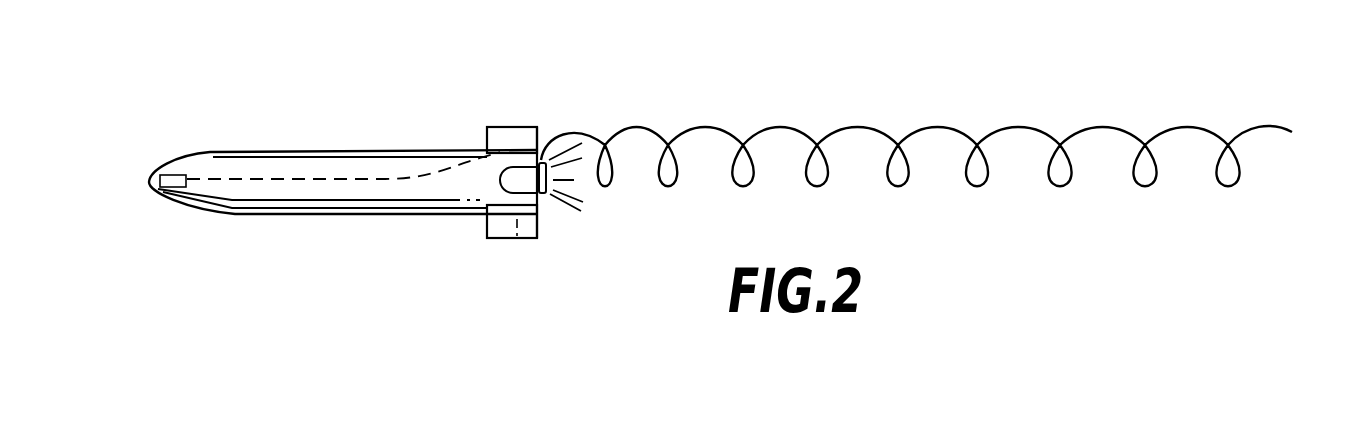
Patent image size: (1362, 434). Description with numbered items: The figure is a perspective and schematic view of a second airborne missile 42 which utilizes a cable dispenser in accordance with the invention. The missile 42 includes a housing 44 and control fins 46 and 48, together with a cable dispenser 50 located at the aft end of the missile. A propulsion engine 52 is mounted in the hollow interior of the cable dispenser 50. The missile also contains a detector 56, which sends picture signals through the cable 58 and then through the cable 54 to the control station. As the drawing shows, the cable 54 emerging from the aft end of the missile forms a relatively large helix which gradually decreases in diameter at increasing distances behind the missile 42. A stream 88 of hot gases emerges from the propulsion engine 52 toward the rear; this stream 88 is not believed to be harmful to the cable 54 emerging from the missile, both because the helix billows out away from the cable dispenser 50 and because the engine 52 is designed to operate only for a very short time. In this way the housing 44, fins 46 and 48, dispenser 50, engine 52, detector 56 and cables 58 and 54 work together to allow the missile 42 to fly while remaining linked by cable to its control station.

The missile 42 is at (178, 240).
The housing 44 is at (272, 215).
The control fin 46 is at (514, 127).
The control fin 48 is at (497, 238).
The cable dispenser 50 is at (517, 241).
The propulsion engine 52 is at (514, 172).
The cable 54 is at (653, 133).
The detector 56 is at (158, 188).
The cable 58 is at (237, 176).
The stream of hot gases 88 is at (578, 148).